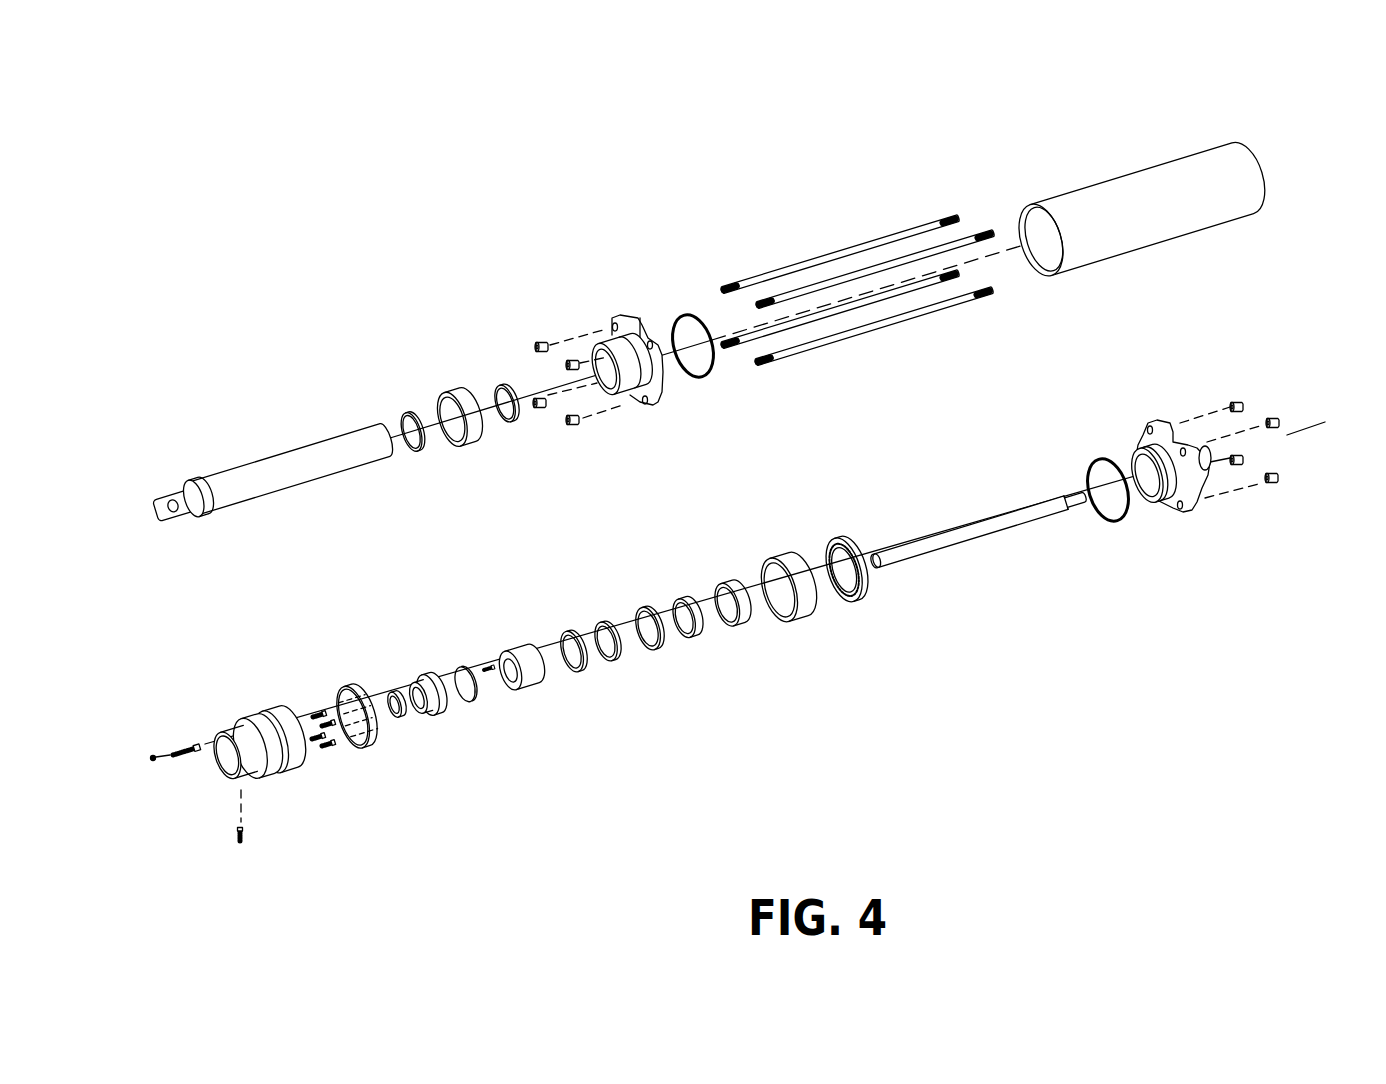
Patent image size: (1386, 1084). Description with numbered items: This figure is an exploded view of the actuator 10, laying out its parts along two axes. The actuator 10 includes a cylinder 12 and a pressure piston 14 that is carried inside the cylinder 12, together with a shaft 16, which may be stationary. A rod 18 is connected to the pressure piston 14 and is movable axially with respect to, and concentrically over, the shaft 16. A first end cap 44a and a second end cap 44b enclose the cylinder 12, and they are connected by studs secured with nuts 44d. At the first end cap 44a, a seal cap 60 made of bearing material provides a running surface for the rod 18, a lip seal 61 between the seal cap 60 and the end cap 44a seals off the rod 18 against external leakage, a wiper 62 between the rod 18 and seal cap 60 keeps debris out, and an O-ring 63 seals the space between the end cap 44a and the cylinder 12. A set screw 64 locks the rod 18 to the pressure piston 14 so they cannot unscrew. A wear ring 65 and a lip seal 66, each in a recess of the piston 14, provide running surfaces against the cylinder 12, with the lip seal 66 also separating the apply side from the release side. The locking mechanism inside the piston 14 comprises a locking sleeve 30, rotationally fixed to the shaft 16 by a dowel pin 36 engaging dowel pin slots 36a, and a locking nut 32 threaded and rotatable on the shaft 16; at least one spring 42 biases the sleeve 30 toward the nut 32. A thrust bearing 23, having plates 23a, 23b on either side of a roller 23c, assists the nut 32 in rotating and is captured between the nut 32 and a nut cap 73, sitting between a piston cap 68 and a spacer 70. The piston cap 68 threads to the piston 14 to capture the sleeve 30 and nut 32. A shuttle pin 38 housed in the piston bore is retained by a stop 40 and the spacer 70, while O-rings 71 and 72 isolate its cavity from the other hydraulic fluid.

The actuator 10 is at (424, 170).
The cylinder 12 is at (1090, 187).
The pressure piston 14 is at (268, 707).
The shaft 16 is at (985, 537).
The rod 18 is at (258, 458).
The thrust bearing 23 is at (752, 742).
The plate 23a is at (580, 668).
The plate 23b is at (657, 647).
The roller 23c is at (617, 658).
The locking sleeve 30 is at (442, 712).
The locking nut 32 is at (527, 687).
The dowel pin 36 is at (489, 660).
The dowel pin slots 36a is at (427, 664).
The shuttle pin 38 is at (195, 740).
The stop 40 is at (155, 762).
The spring 42 is at (325, 750).
The first end cap 44a is at (618, 317).
The second end cap 44b is at (1193, 515).
The nuts 44d is at (540, 340).
The seal cap 60 is at (460, 390).
The lip seal 61 is at (507, 385).
The wiper 62 is at (403, 417).
The O-ring 63 is at (683, 315).
The set screw 64 is at (245, 837).
The wear ring 65 is at (805, 615).
The lip seal 66 is at (370, 747).
The piston cap 68 is at (857, 597).
The spacer 70 is at (747, 620).
The O-ring 71 is at (397, 718).
The O-ring 72 is at (477, 700).
The nut cap 73 is at (700, 637).